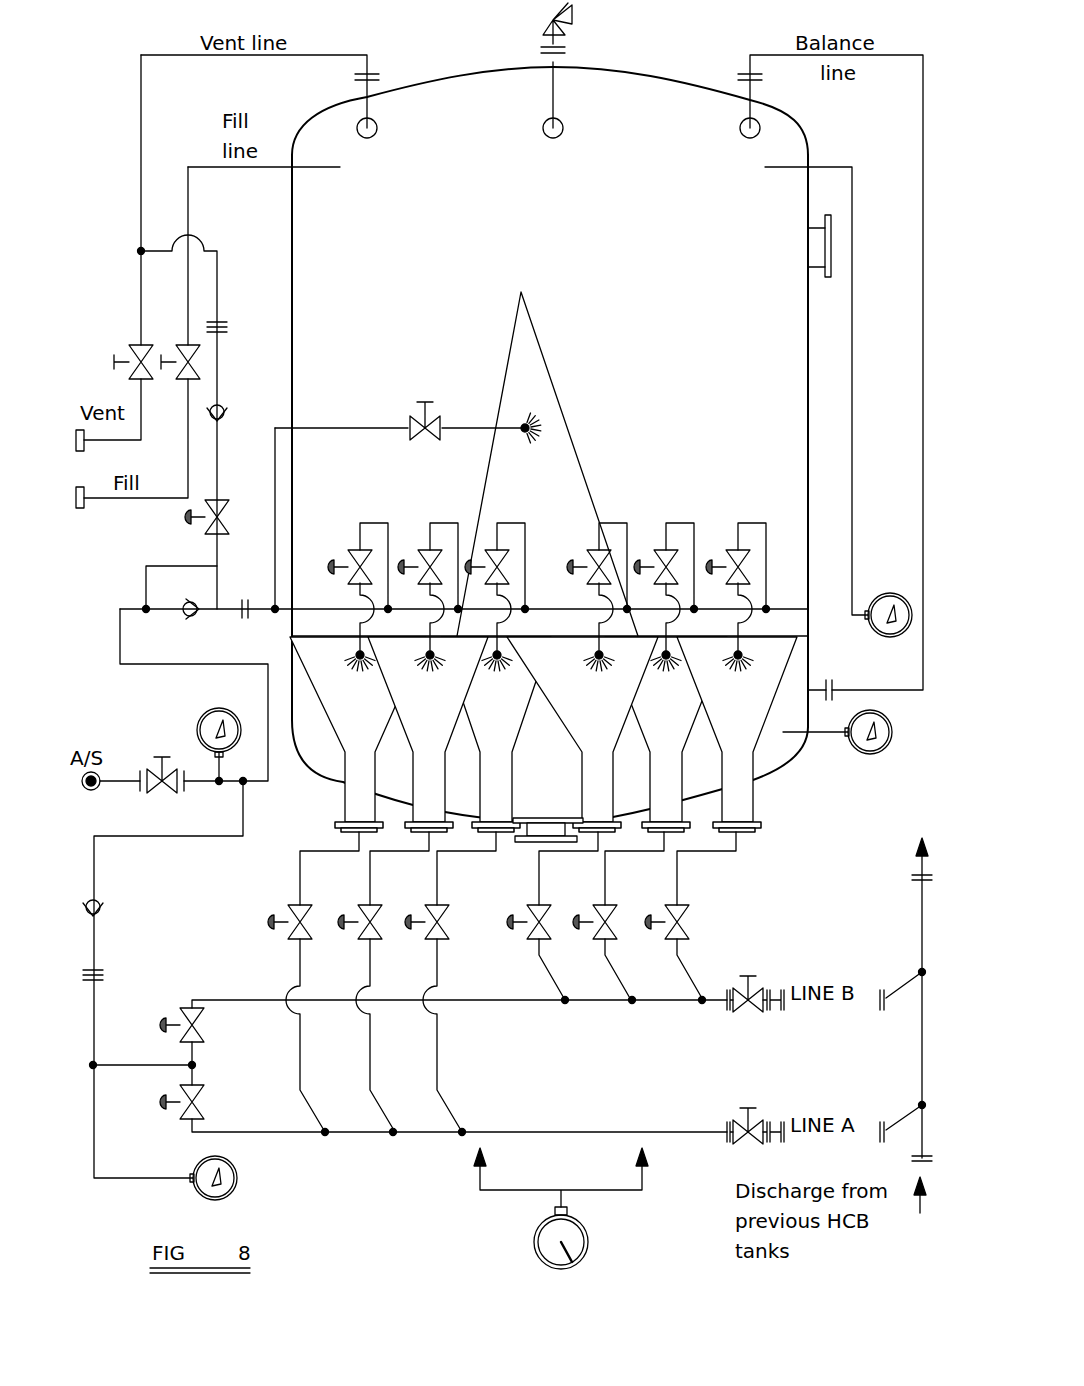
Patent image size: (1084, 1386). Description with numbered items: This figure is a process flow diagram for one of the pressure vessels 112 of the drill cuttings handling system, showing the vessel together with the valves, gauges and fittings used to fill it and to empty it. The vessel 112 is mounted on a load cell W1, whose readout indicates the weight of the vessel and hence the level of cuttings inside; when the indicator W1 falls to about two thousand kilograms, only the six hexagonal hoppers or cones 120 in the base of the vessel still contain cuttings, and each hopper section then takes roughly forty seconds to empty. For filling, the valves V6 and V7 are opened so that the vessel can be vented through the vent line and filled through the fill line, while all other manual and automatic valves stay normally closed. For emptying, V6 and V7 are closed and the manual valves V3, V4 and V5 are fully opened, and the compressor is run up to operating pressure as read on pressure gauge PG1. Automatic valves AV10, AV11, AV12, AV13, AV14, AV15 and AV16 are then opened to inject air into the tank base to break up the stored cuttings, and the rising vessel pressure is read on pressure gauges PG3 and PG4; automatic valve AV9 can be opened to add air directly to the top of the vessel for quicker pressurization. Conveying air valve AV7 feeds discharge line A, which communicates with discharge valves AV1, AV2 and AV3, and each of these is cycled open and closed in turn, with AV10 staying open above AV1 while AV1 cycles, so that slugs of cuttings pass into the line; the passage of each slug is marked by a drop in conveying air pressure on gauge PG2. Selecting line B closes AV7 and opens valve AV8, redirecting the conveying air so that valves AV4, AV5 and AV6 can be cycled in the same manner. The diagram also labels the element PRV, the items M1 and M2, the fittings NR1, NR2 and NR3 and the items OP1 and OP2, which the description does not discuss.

The pressure vessel 112 is at (290, 290).
The hexagonal hoppers or cones 120 is at (360, 726).
The pressure relief valve PRV is at (585, 23).
The manhole M1 is at (825, 263).
The manhole M2 is at (548, 816).
The manual valve V3 is at (162, 761).
The manual valve V4 is at (755, 980).
The manual valve V5 is at (755, 1111).
The valve V6 is at (175, 349).
The valve V7 is at (128, 349).
The discharge valve AV1 is at (301, 982).
The discharge valve AV2 is at (370, 982).
The discharge valve AV3 is at (438, 982).
The discharge valve AV4 is at (552, 916).
The discharge valve AV5 is at (618, 916).
The discharge valve AV6 is at (690, 916).
The conveying air valve AV7 is at (204, 1102).
The valve AV8 is at (204, 1025).
The automatic valve AV9 is at (189, 530).
The automatic valve AV10 is at (360, 582).
The automatic valve AV11 is at (431, 582).
The automatic valve AV12 is at (505, 582).
The automatic valve AV13 is at (599, 582).
The automatic valve AV14 is at (669, 582).
The automatic valve AV15 is at (748, 582).
The automatic valve AV16 is at (408, 408).
The pressure gauge PG1 is at (218, 735).
The pressure gauge PG2 is at (239, 1178).
The pressure gauge PG3 is at (887, 604).
The pressure gauge PG4 is at (837, 750).
The non-return valve NR1 is at (121, 910).
The non-return valve NR2 is at (186, 623).
The non-return valve NR3 is at (240, 401).
The orifice plate OP1 is at (177, 642).
The orifice plate OP2 is at (240, 597).
The load cell W1 is at (508, 1224).